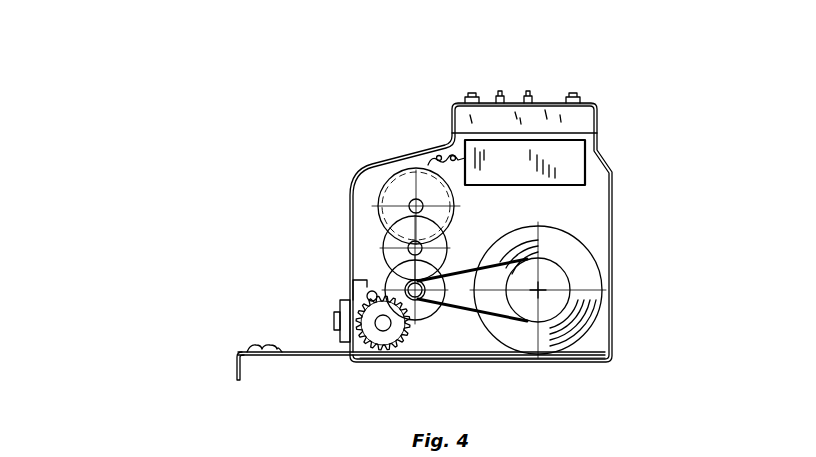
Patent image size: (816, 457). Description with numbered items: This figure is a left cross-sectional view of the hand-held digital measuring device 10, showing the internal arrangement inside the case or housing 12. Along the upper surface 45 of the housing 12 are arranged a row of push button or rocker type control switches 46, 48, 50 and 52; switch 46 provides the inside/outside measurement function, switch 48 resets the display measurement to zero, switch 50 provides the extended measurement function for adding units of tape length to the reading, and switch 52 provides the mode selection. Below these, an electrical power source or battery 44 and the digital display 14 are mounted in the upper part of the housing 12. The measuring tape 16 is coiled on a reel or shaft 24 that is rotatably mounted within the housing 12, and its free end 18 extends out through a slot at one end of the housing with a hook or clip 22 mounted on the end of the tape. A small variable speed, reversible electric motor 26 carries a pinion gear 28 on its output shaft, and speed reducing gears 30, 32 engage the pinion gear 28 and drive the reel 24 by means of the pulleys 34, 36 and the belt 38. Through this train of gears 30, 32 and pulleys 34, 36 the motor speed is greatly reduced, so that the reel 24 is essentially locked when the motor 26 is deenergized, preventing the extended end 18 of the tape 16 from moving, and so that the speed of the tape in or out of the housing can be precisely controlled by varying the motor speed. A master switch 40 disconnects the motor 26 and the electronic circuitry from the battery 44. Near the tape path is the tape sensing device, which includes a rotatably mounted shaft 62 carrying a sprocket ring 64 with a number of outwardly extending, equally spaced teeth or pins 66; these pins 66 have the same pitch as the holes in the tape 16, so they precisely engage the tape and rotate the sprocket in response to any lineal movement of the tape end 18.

The hand-held digital measuring device 10 is at (645, 206).
The housing 12 is at (433, 147).
The digital display 14 is at (572, 118).
The measuring tape 16 is at (520, 362).
The free end of the measuring tape 18 is at (299, 350).
The hook or clip 22 is at (242, 350).
The reel or shaft 24 is at (590, 303).
The electric motor 26 is at (392, 188).
The pinion gear 28 is at (416, 198).
The speed reducing gear 30 is at (400, 235).
The speed reducing gear 32 is at (393, 275).
The pulley 34 is at (417, 302).
The pulley 36 is at (567, 283).
The belt 38 is at (485, 318).
The master switch 40 is at (340, 308).
The battery 44 is at (568, 156).
The upper surface of the housing 45 is at (488, 102).
The control switch 46 is at (472, 96).
The control switch 48 is at (500, 95).
The control switch 50 is at (528, 95).
The control switch 52 is at (573, 95).
The rotatably mounted shaft 62 is at (383, 331).
The sprocket ring 64 is at (397, 348).
The teeth or pins 66 is at (357, 364).